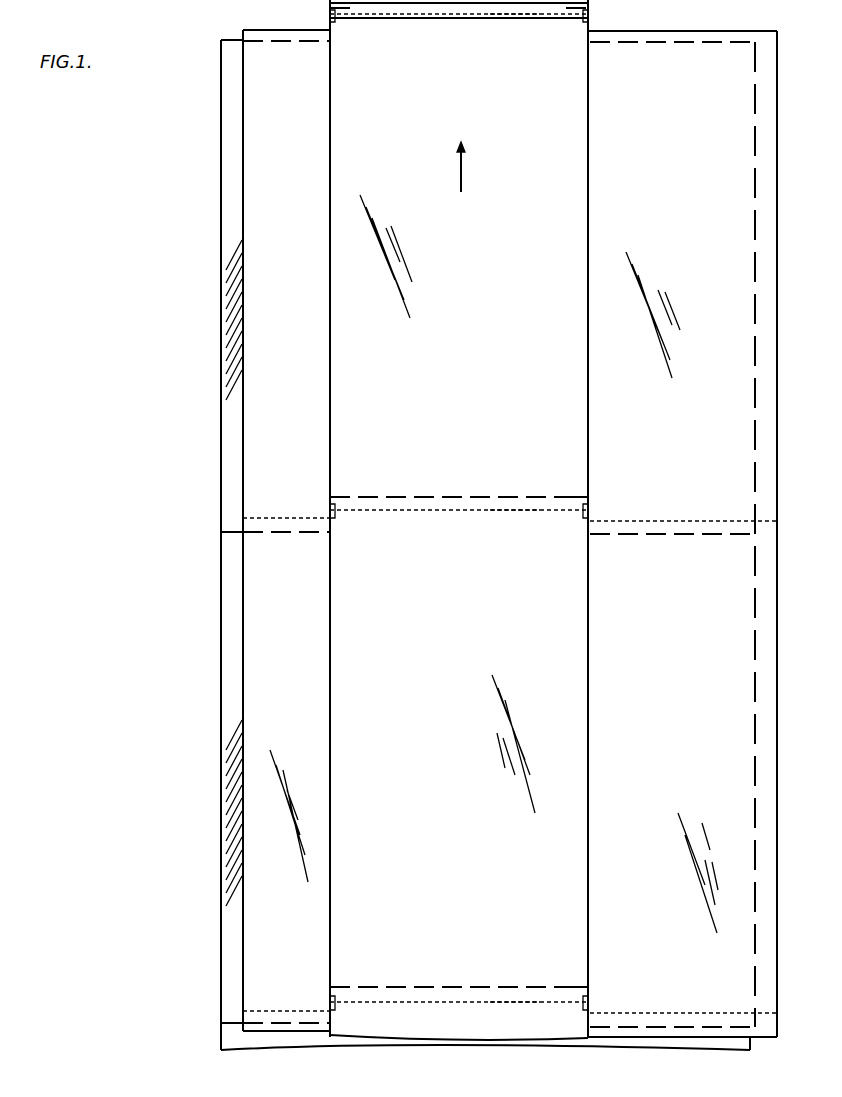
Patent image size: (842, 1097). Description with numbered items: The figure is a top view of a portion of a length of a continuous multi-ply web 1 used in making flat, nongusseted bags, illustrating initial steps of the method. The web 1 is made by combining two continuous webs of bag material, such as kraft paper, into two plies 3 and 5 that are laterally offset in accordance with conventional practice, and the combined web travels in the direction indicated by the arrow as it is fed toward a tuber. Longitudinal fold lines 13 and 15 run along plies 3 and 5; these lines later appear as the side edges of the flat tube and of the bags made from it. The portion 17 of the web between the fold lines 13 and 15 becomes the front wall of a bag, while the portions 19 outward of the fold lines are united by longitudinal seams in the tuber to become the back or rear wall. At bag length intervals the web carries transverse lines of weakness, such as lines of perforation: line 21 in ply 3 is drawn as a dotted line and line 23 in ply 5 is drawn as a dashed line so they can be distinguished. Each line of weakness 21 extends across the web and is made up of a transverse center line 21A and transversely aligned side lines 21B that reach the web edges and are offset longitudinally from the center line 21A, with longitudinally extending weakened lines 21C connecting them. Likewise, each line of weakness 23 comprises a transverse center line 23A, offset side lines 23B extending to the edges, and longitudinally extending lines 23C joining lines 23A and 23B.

The continuous multi-ply web 1 is at (216, 401).
The inner ply 3 is at (256, 197).
The outer ply 5 is at (228, 128).
The fold line 13 is at (330, 378).
The fold line 15 is at (588, 358).
The front wall portion 17 is at (464, 266).
The back wall portion 19 is at (292, 279).
The line of weakness 21 is at (508, 18).
The transverse center line 21A is at (530, 22).
The transverse side lines 21B is at (290, 30).
The longitudinally extending weakened lines 21C is at (332, 20).
The line of weakness 23 is at (432, 4).
The transverse center line 23A is at (462, 22).
The transverse side lines 23B is at (243, 30).
The longitudinally extending lines 23C is at (330, 10).